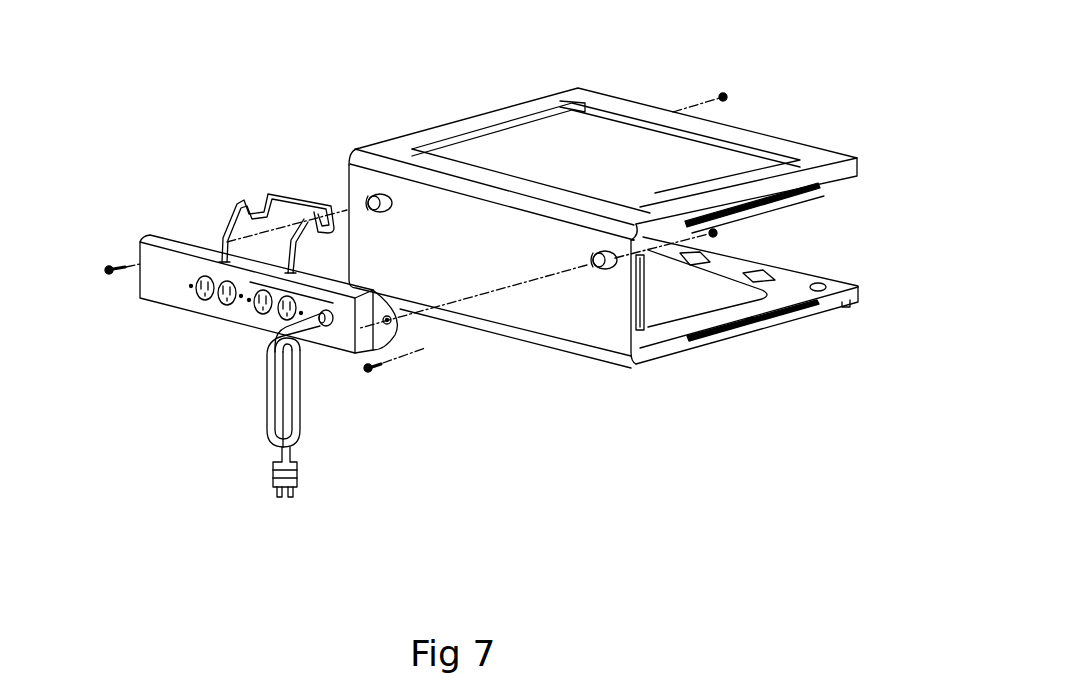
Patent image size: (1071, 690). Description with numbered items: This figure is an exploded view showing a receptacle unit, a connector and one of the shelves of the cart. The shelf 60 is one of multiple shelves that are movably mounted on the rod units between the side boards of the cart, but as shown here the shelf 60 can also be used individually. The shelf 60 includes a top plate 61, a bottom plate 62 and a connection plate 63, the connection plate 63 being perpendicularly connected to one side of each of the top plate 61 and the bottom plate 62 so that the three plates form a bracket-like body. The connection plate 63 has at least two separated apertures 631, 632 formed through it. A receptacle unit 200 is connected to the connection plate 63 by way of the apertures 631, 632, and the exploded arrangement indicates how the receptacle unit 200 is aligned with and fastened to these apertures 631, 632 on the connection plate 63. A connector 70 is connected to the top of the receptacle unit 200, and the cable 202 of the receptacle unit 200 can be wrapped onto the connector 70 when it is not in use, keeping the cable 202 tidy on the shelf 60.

The shelf 60 is at (659, 93).
The top plate 61 is at (793, 150).
The bottom plate 62 is at (812, 296).
The connection plate 63 is at (550, 316).
The aperture 631 is at (370, 196).
The aperture 632 is at (605, 272).
The connector 70 is at (280, 196).
The receptacle unit 200 is at (181, 298).
The cable 202 is at (272, 420).